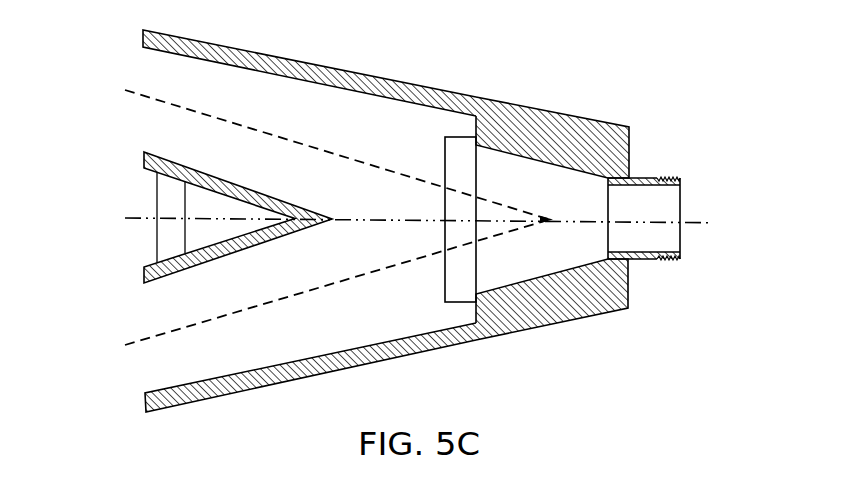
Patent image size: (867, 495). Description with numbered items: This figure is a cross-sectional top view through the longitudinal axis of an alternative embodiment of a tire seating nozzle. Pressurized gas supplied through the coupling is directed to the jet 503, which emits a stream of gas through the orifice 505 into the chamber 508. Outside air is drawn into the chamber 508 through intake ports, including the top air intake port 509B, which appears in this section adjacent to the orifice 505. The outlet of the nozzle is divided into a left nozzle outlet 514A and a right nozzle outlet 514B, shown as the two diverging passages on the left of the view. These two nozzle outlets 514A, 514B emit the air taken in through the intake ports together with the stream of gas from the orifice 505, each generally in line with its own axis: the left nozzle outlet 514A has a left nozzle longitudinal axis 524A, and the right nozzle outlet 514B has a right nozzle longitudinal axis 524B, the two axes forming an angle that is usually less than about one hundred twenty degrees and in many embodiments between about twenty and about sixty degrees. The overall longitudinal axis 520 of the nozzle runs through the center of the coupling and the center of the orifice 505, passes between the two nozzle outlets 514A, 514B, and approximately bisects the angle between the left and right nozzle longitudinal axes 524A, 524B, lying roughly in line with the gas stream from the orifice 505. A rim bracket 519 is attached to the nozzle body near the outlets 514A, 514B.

The jet 503 is at (578, 210).
The orifice 505 is at (482, 168).
The chamber 508 is at (377, 305).
The top air intake port 509B is at (456, 148).
The left nozzle outlet 514A is at (143, 307).
The right nozzle outlet 514B is at (143, 70).
The rim bracket 519 is at (156, 192).
The overall longitudinal axis 520 is at (708, 223).
The left nozzle longitudinal axis 524A is at (408, 263).
The right nozzle longitudinal axis 524B is at (312, 145).